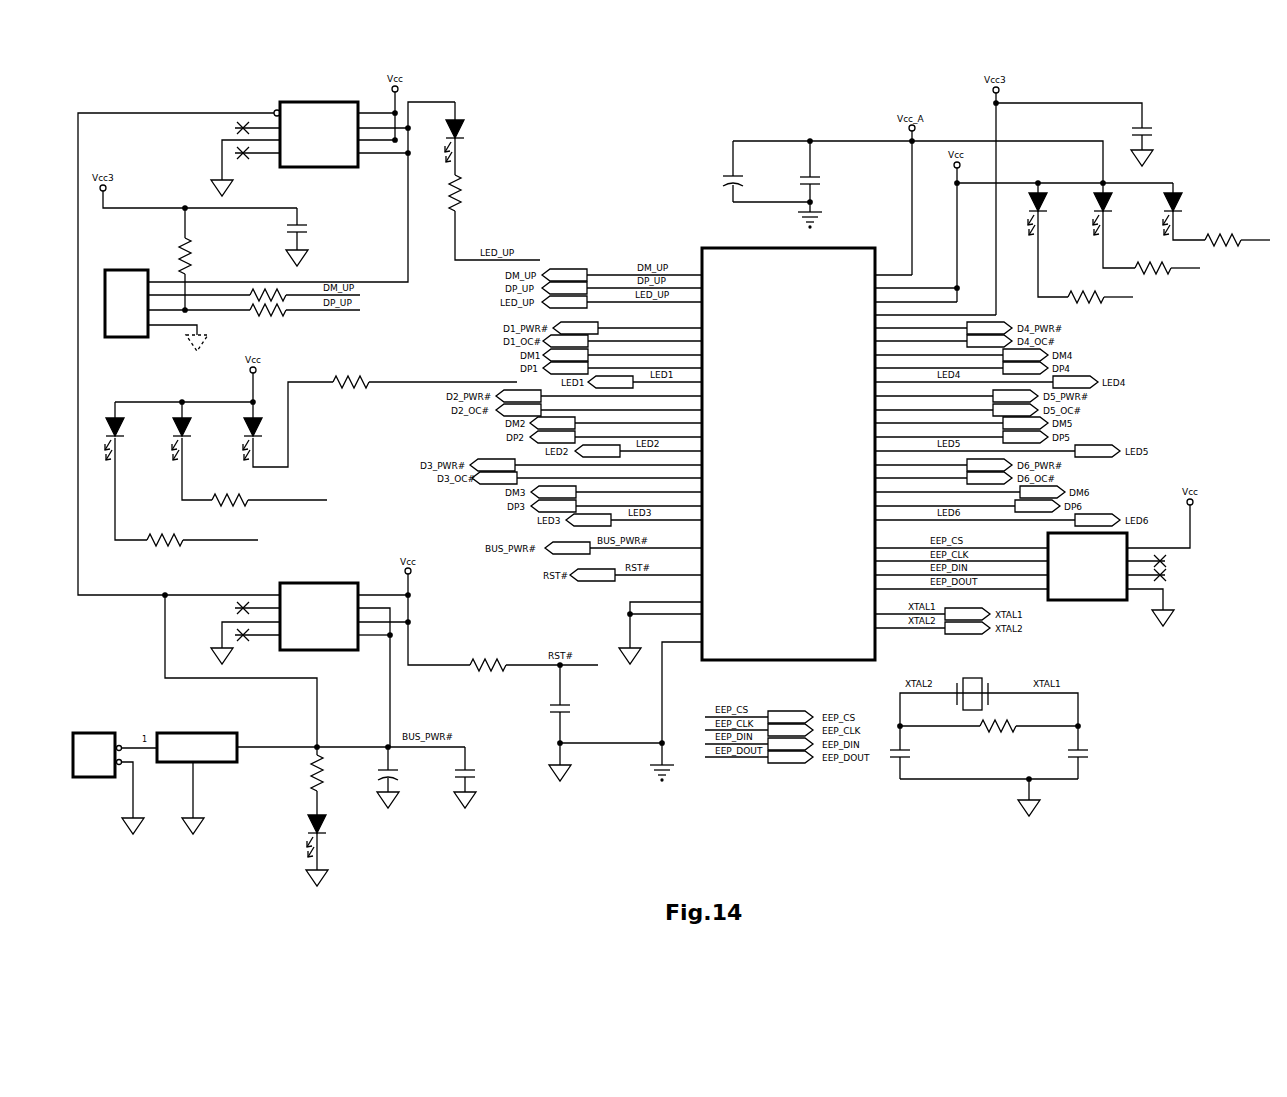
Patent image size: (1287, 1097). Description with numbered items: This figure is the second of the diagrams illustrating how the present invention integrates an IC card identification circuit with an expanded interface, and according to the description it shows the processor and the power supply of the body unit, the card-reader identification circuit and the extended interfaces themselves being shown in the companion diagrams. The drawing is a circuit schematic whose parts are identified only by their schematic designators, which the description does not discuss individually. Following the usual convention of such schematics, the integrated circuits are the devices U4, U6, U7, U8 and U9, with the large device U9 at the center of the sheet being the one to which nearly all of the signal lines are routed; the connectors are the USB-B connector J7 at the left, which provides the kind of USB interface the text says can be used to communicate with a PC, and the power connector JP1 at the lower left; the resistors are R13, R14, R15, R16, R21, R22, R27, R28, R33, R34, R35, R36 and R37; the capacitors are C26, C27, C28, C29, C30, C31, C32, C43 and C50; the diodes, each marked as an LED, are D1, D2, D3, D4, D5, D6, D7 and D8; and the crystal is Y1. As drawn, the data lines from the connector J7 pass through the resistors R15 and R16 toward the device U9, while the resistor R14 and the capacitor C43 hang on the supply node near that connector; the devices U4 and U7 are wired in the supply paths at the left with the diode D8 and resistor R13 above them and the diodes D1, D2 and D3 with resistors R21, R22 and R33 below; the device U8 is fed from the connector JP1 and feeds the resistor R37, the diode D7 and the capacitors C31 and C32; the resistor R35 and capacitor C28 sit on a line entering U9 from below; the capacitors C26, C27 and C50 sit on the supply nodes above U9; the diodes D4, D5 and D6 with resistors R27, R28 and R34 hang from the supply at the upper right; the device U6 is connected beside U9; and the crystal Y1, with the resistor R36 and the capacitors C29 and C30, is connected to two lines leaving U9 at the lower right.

The power switch MIC2575-28M U4 is at (289, 141).
The EEPROM IS93C66-3-DIP U6 is at (1105, 572).
The power switch MIC2575-18M U7 is at (289, 616).
The voltage regulator MIC29310BT-5V U8 is at (204, 769).
The USB hub controller AU9216-52PQFP U9 is at (789, 456).
The USB-B connector J7 is at (155, 307).
The power connector JP1 is at (103, 769).
The resistor 1K R13 is at (494, 217).
The resistor 1.5K R14 is at (198, 260).
The resistor 27 R15 is at (254, 278).
The resistor 27 R16 is at (254, 325).
The resistor 1K R21 is at (425, 370).
The resistor 1K R22 is at (269, 488).
The resistor 1K R27 is at (1102, 282).
The resistor 1K R28 is at (1169, 255).
The resistor 1K R33 is at (202, 528).
The resistor 1K R34 is at (1240, 228).
The resistor 150K R35 is at (534, 664).
The resistor 1M R36 is at (998, 740).
The resistor 1K R37 is at (306, 781).
The capacitor 10uF C26 is at (748, 171).
The capacitor 0.1uF C27 is at (825, 184).
The capacitor 1uF C28 is at (573, 723).
The capacitor 15PF C29 is at (915, 752).
The capacitor 15PF C30 is at (1092, 752).
The capacitor 10uF C31 is at (402, 777).
The capacitor 0.1uF C32 is at (481, 777).
The capacitor 1uF C43 is at (309, 237).
The capacitor 0.1uF C50 is at (1158, 145).
The LED D1 is at (280, 424).
The LED D2 is at (185, 451).
The LED D3 is at (119, 471).
The LED D4 is at (1041, 240).
The LED D5 is at (1106, 225).
The LED D6 is at (1176, 211).
The LED D7 is at (320, 850).
The LED D8 is at (458, 138).
The crystal Y1 is at (980, 688).